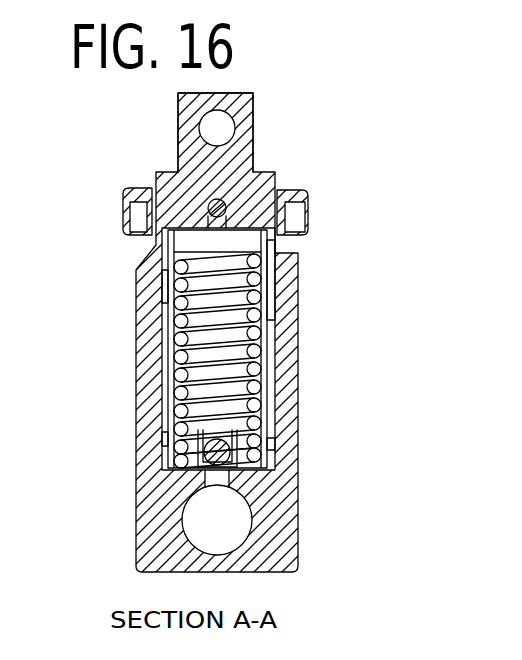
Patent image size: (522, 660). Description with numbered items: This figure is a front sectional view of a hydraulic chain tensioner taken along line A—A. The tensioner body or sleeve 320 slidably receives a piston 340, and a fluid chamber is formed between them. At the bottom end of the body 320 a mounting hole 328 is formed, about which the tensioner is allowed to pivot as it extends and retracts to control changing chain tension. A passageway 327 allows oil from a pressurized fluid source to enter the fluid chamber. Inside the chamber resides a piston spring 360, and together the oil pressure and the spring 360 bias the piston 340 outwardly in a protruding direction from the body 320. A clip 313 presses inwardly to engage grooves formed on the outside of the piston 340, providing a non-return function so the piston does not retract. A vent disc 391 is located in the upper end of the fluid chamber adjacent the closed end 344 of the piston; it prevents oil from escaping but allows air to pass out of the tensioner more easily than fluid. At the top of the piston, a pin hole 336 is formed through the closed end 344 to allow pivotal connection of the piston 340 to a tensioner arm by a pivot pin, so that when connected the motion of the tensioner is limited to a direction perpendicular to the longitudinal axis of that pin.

The tensioner body 320 is at (136, 445).
The closed end of the piston 344 is at (178, 128).
The pin hole 336 is at (229, 122).
The clip 313 is at (308, 213).
The piston 340 is at (264, 340).
The vent disc 391 is at (256, 244).
The piston spring 360 is at (246, 368).
The passageway 327 is at (206, 464).
The mounting hole 328 is at (243, 513).